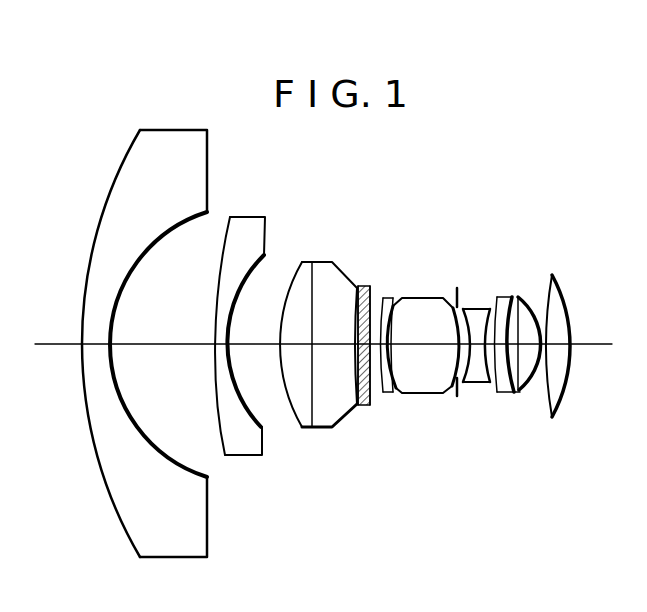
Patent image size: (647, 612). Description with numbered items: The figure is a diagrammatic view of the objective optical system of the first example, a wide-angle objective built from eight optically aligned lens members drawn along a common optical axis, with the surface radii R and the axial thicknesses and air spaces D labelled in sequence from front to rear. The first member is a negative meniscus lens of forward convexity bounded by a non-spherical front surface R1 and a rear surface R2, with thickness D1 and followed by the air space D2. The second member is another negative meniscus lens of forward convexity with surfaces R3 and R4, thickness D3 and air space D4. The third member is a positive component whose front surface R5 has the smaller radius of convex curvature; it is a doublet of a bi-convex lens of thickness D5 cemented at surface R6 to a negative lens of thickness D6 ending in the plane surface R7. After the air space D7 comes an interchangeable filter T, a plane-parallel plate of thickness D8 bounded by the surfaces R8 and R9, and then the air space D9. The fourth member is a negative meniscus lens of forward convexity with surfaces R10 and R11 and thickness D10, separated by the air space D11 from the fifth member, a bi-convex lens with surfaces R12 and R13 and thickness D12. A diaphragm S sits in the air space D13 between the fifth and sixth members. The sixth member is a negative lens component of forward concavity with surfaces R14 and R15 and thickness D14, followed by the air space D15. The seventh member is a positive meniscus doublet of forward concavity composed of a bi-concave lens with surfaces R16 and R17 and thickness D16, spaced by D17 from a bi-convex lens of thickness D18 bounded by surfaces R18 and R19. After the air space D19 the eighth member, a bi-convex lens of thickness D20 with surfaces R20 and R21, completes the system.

The radius of curvature of the first surface R1 is at (115, 505).
The radius of curvature of the second surface R2 is at (194, 464).
The radius of curvature of the third surface R3 is at (220, 448).
The radius of curvature of the fourth surface R4 is at (262, 428).
The radius of curvature of the fifth surface R5 is at (300, 426).
The radius of curvature of the sixth surface R6 is at (313, 428).
The radius of curvature of the seventh surface R7 is at (355, 408).
The radius of curvature of the eighth surface R8 is at (360, 406).
The radius of curvature of the ninth surface R9 is at (370, 407).
The radius of curvature of the tenth surface R10 is at (381, 394).
The radius of curvature of the eleventh surface R11 is at (391, 394).
The radius of curvature of the twelfth surface R12 is at (403, 394).
The radius of curvature of the thirteenth surface R13 is at (447, 395).
The radius of curvature of the fourteenth surface R14 is at (465, 384).
The radius of curvature of the fifteenth surface R15 is at (488, 384).
The radius of curvature of the sixteenth surface R16 is at (497, 394).
The radius of curvature of the seventeenth surface R17 is at (513, 394).
The radius of curvature of the eighteenth surface R18 is at (519, 393).
The radius of curvature of the nineteenth surface R19 is at (532, 392).
The radius of curvature of the twentieth surface R20 is at (548, 416).
The radius of curvature of the twenty-first surface R21 is at (560, 402).
The axial thickness of the first lens element D1 is at (90, 342).
The axial air space between the first and second members D2 is at (143, 343).
The axial thickness of the second lens element D3 is at (212, 343).
The axial air space between the second and third members D4 is at (253, 344).
The axial thickness of the bi-convex lens of the third member D5 is at (298, 344).
The axial thickness of the negative lens of the third member D6 is at (333, 344).
The axial air space between the third member and the filter D7 is at (356, 300).
The axial thickness of the filter D8 is at (364, 286).
The axial air space between the filter and the fourth member D9 is at (380, 312).
The axial thickness of the fourth lens element D10 is at (397, 312).
The axial air space between the fourth and fifth members D11 is at (393, 343).
The axial thickness of the fifth lens element D12 is at (420, 340).
The axial air space between the fifth and sixth members D13 is at (452, 312).
The axial thickness of the sixth lens element D14 is at (473, 312).
The axial air space between the sixth and seventh members D15 is at (492, 312).
The axial thickness of the bi-concave lens of the seventh member D16 is at (505, 312).
The axial air space within the seventh member D17 is at (514, 312).
The axial thickness of the bi-convex lens of the seventh member D18 is at (552, 327).
The axial air space between the seventh and eighth members D19 is at (550, 333).
The axial thickness of the eighth lens element D20 is at (560, 340).
The interchangeable filter T is at (372, 286).
The diaphragm S is at (457, 288).